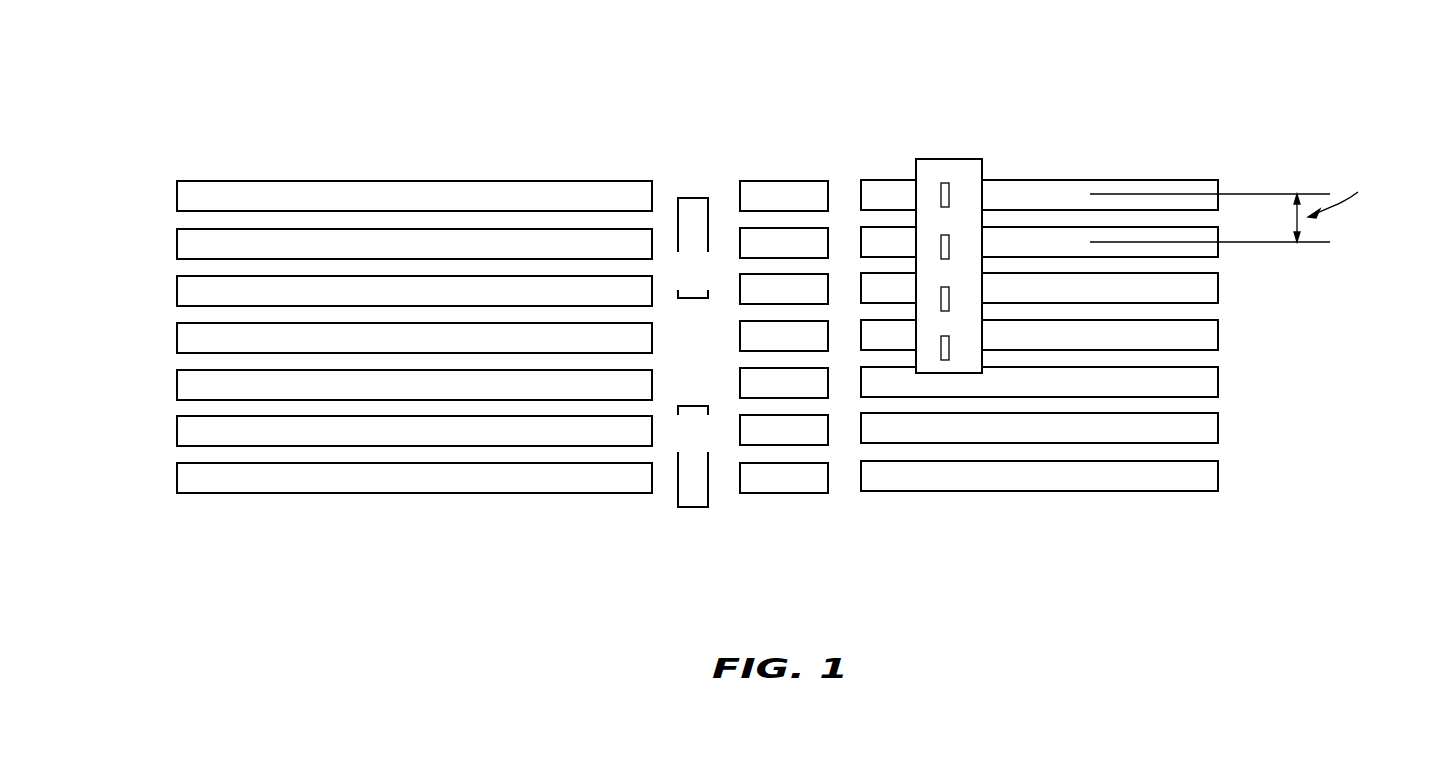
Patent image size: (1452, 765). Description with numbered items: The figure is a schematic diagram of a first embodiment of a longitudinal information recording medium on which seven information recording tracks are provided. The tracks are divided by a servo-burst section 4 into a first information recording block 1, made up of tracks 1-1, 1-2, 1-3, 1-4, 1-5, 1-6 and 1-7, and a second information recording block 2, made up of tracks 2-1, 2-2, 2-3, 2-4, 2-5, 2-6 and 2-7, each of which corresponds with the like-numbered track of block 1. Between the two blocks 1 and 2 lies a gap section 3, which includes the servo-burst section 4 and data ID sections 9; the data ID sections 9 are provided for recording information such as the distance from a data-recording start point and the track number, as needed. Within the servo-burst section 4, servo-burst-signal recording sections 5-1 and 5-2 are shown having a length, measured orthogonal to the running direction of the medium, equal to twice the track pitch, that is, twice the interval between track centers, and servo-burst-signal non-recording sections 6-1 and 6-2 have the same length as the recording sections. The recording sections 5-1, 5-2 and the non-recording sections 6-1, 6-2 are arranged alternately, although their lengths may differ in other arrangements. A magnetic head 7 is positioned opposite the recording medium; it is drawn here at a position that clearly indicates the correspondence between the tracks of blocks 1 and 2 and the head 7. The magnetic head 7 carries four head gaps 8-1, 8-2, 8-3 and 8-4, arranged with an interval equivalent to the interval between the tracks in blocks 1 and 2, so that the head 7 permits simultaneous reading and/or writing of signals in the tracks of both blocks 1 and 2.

The information recording block 1 is at (307, 181).
The track 1-1 is at (384, 197).
The track 1-2 is at (384, 245).
The track 1-3 is at (384, 292).
The track 1-4 is at (384, 339).
The track 1-5 is at (384, 386).
The track 1-6 is at (384, 432).
The track 1-7 is at (384, 479).
The information recording block 2 is at (1122, 179).
The track 2-1 is at (1039, 175).
The track 2-2 is at (1217, 220).
The track 2-3 is at (1186, 270).
The track 2-4 is at (1194, 316).
The track 2-5 is at (1194, 363).
The track 2-6 is at (1194, 409).
The track 2-7 is at (1194, 456).
The gap section 3 is at (663, 181).
The servo-burst section 4 is at (752, 148).
The servo-burst-signal recording section 5-1 is at (694, 248).
The servo-burst-signal recording section 5-2 is at (694, 427).
The servo-burst-signal non-recording section 6-1 is at (694, 320).
The servo-burst-signal non-recording section 6-2 is at (694, 504).
The magnetic head 7 is at (948, 159).
The head gap 8-1 is at (950, 195).
The head gap 8-2 is at (950, 244).
The head gap 8-3 is at (950, 295).
The head gap 8-4 is at (950, 340).
The data ID sections 9 is at (938, 495).